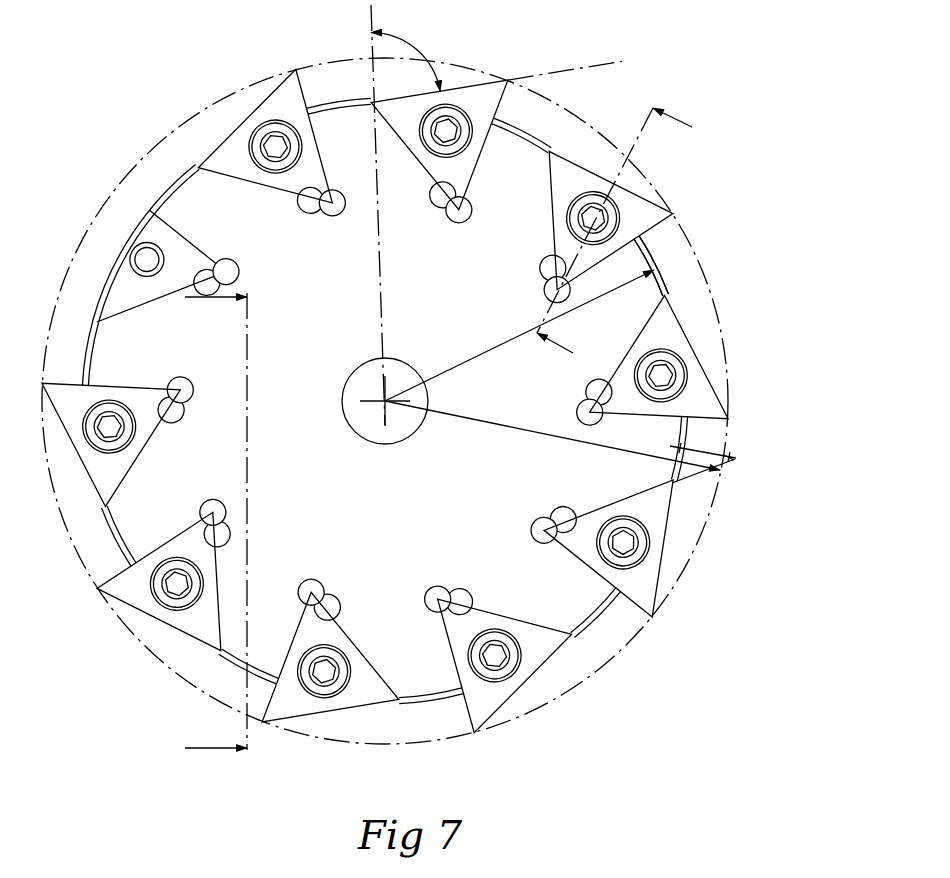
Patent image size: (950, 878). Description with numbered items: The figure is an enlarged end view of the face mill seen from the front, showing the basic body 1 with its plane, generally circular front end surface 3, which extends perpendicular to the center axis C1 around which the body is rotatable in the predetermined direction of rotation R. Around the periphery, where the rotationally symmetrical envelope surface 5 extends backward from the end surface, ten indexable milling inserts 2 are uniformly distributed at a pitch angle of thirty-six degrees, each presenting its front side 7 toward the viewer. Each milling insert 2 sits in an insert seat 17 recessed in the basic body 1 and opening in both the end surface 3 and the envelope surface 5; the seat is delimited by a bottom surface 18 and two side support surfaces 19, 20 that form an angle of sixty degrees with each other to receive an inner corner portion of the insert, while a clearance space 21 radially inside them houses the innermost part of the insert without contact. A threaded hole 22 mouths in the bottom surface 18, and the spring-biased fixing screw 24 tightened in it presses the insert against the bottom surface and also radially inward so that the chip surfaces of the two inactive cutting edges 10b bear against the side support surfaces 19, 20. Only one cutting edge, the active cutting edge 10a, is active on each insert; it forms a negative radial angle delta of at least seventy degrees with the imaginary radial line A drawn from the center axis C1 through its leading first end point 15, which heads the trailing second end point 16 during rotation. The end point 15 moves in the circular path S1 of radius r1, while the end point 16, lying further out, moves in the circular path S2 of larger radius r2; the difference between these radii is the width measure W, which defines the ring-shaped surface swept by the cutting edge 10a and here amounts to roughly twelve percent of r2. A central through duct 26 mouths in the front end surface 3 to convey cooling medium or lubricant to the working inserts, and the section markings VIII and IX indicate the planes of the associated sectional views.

The basic body 1 is at (385, 411).
The milling insert 2 is at (504, 647).
The front end surface 3 is at (385, 411).
The envelope surface 5 is at (437, 706).
The front side 7 is at (467, 638).
The active cutting edge 10a is at (264, 150).
The inactive cutting edge 10b is at (264, 150).
The first end point 15 is at (252, 150).
The second end point 16 is at (237, 127).
The insert seat 17 is at (229, 256).
The bottom surface 18 is at (195, 276).
The side support surface 19 is at (158, 300).
The side support surface 20 is at (198, 253).
The clearance space 21 is at (311, 586).
The threaded hole 22 is at (146, 258).
The fixing screw 24 is at (624, 494).
The central through duct 26 is at (366, 411).
The imaginary radial line A is at (379, 236).
The center axis C1 is at (384, 410).
The direction of rotation R is at (514, 502).
The circular path S1 is at (655, 256).
The circular path S2 is at (715, 300).
The width measure W is at (703, 445).
The radius r1 is at (488, 350).
The radius r2 is at (507, 426).
The radial angle delta is at (496, 58).
The section line VIII- VIII is at (712, 107).
The section line IX- IX is at (214, 330).